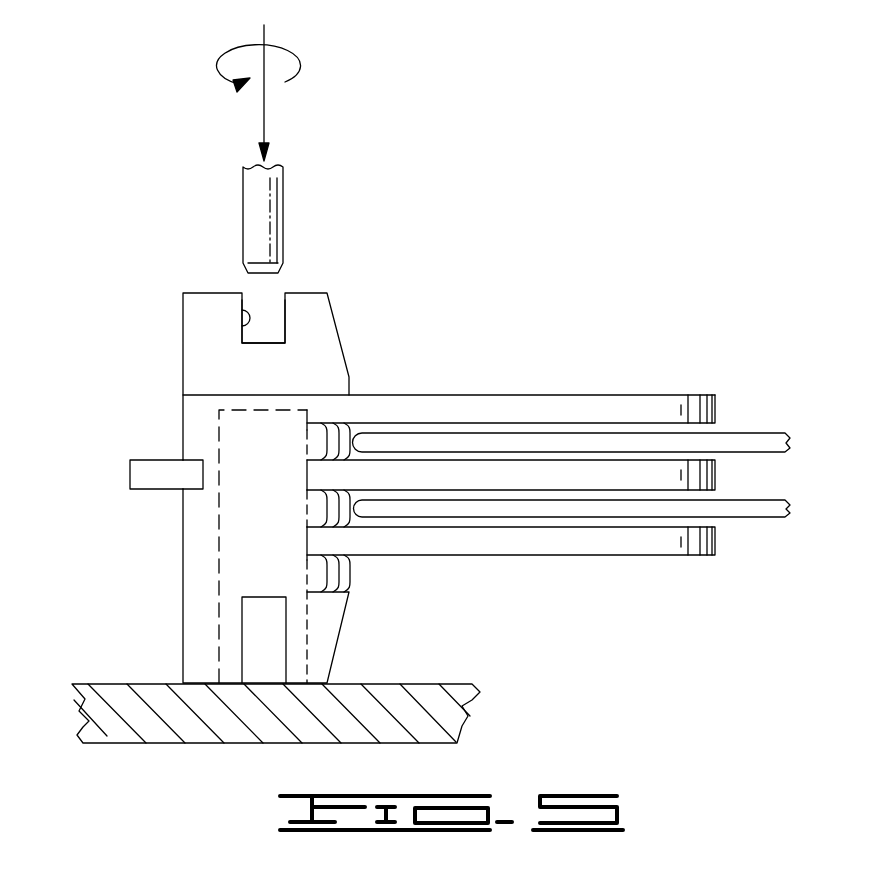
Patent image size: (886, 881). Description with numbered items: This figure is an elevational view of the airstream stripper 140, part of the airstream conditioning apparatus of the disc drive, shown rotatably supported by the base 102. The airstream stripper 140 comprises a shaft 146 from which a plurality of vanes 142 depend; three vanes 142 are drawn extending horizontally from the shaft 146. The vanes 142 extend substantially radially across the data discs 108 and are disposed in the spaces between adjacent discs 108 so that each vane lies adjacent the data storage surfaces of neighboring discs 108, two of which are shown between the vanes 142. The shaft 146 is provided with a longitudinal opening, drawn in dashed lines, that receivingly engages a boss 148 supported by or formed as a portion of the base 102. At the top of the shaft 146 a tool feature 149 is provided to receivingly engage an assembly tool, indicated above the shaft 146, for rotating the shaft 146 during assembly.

The base 102 is at (138, 698).
The data disc 108 is at (755, 433).
The airstream stripper 140 is at (426, 352).
The vanes 142 is at (620, 395).
The shaft 146 is at (183, 408).
The boss 148 is at (307, 613).
The tool feature 149 is at (240, 328).